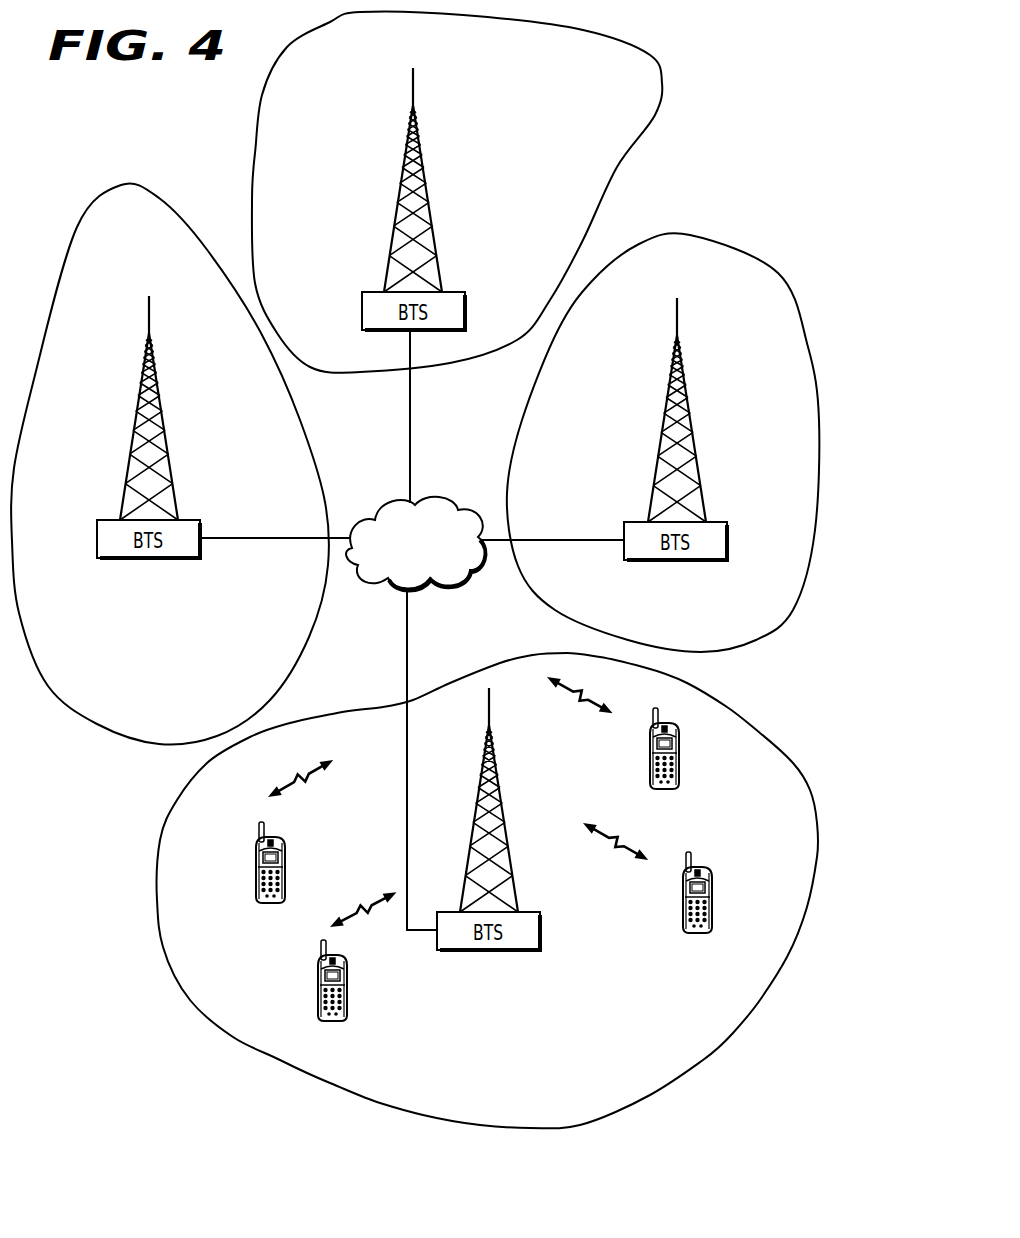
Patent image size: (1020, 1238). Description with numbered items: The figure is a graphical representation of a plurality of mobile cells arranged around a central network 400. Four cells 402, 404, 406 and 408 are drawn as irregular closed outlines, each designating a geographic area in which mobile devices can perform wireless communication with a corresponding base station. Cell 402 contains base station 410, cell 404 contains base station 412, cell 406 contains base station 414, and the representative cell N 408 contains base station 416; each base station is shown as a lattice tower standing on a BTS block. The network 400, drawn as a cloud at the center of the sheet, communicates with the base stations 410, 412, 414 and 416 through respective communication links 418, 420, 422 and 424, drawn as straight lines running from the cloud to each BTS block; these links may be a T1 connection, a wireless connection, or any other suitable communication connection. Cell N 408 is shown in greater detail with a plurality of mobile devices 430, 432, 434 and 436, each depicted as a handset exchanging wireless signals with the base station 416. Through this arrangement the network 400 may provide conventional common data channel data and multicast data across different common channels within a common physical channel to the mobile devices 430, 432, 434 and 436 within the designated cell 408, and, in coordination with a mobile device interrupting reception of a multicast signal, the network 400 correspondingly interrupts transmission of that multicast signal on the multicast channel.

The network 400 is at (445, 497).
The cell 402 is at (644, 130).
The cell 404 is at (127, 184).
The cell 406 is at (688, 233).
The cell N 408 is at (424, 1118).
The base station 410 is at (395, 209).
The base station 412 is at (131, 435).
The base station 414 is at (696, 432).
The base station 416 is at (508, 822).
The communication link 418 is at (408, 427).
The communication link 420 is at (273, 537).
The communication link 422 is at (564, 539).
The communication link 424 is at (410, 628).
The mobile device 430 is at (287, 874).
The mobile device 432 is at (714, 902).
The mobile device 434 is at (683, 757).
The mobile device 436 is at (347, 991).